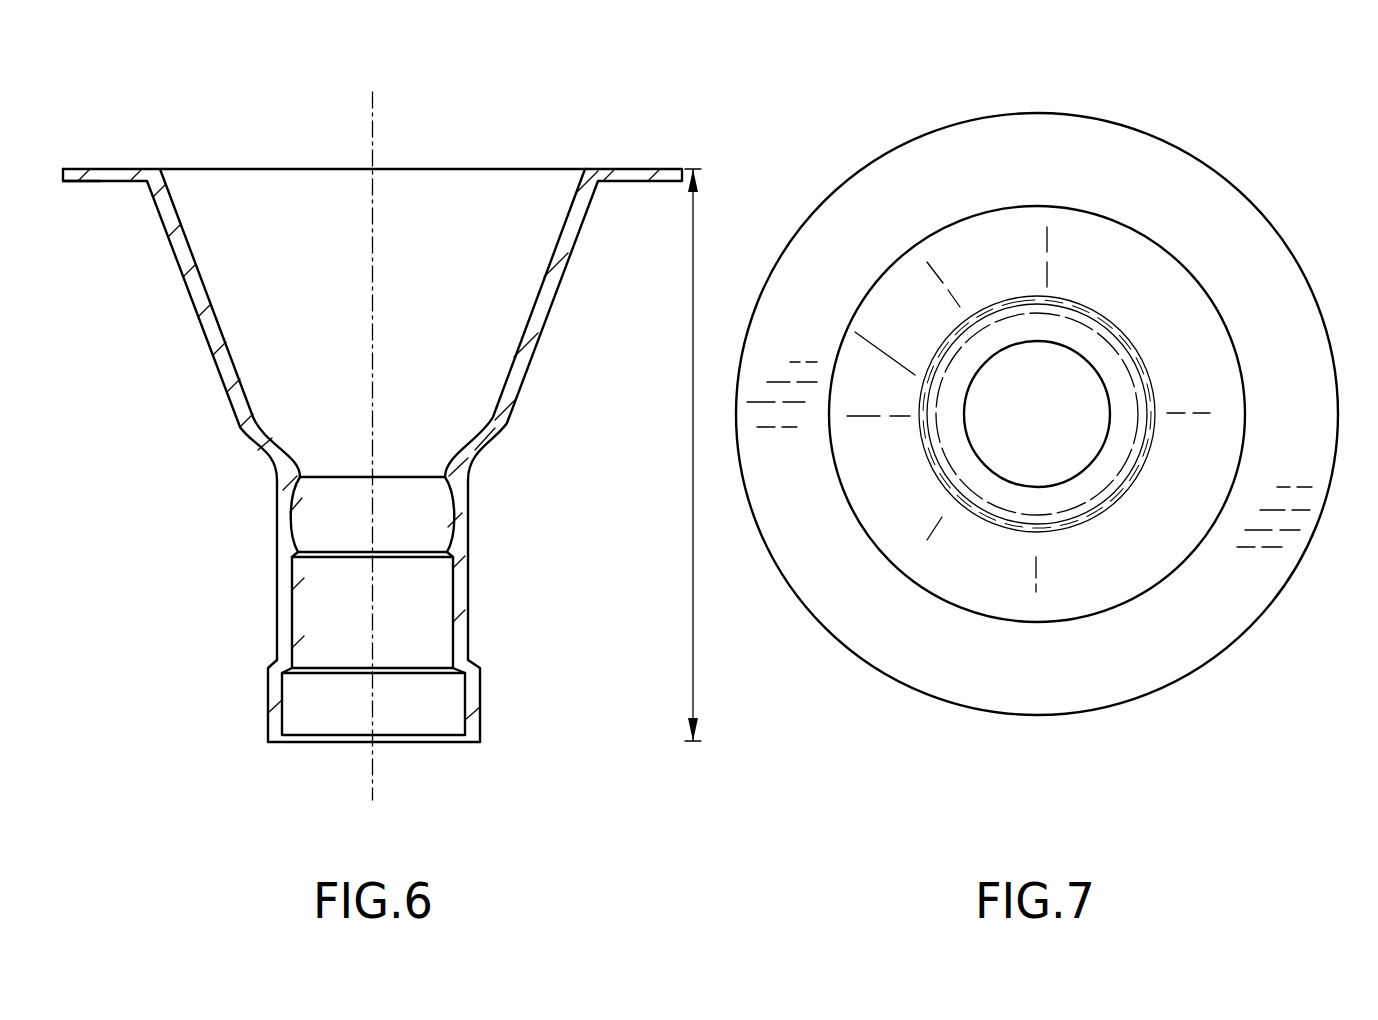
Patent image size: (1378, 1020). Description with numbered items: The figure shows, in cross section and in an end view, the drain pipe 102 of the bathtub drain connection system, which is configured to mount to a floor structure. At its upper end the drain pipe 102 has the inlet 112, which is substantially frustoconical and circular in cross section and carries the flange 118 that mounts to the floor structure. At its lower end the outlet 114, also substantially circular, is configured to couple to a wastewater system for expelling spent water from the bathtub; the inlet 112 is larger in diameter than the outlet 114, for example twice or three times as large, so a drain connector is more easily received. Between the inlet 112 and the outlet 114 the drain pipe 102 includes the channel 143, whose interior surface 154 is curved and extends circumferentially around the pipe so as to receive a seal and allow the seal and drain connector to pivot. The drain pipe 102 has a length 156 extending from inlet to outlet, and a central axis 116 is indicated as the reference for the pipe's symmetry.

In FIG. 6, the drain pipe 102 is at (653, 135).
In FIG. 7, the drain pipe 102 is at (1275, 197).
In FIG. 6, the inlet 112 is at (217, 168).
In FIG. 7, the inlet 112 is at (1108, 690).
In FIG. 6, the outlet 114 is at (268, 713).
In FIG. 6, the central axis 116 is at (373, 120).
In FIG. 6, the flange 118 is at (118, 182).
In FIG. 7, the flange 118 is at (1203, 662).
In FIG. 6, the channel 143 is at (302, 493).
In FIG. 6, the interior surface 154 is at (327, 521).
In FIG. 6, the length 156 is at (692, 445).